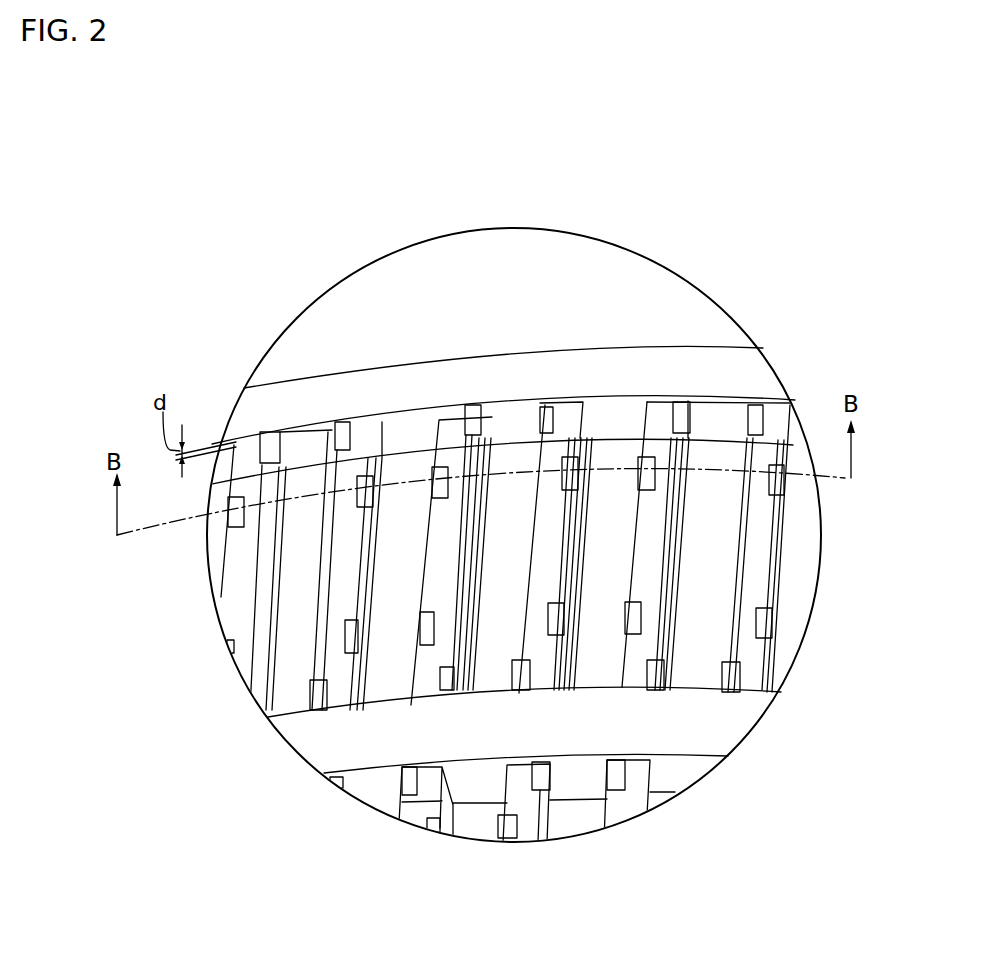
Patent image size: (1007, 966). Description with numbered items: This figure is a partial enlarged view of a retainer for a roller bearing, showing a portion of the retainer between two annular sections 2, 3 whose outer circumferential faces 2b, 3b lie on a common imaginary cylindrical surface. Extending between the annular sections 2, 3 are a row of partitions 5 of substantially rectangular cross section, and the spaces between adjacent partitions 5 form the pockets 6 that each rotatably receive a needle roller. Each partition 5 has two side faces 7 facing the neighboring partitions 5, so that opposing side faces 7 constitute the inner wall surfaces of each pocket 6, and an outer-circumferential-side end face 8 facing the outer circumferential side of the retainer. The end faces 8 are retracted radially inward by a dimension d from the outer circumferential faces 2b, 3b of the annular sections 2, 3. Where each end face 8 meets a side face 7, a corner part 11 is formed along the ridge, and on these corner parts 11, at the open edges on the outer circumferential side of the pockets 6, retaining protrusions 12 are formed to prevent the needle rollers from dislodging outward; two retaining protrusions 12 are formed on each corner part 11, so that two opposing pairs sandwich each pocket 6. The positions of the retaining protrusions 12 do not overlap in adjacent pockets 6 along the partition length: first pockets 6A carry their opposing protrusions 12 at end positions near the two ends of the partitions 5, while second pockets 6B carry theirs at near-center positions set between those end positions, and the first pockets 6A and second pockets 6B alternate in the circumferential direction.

The annular section 2 is at (733, 349).
The outer circumferential face 2b is at (707, 373).
The annular section 3 is at (673, 767).
The outer circumferential face 3b is at (727, 717).
The partition 5 is at (438, 515).
The pocket 6 is at (290, 573).
The first pocket 6A is at (505, 580).
The second pocket 6B is at (503, 583).
The side face 7 is at (388, 425).
The outer-circumferential-side end face 8 is at (453, 423).
The corner part 11 is at (530, 460).
The retaining protrusion 12 is at (556, 440).